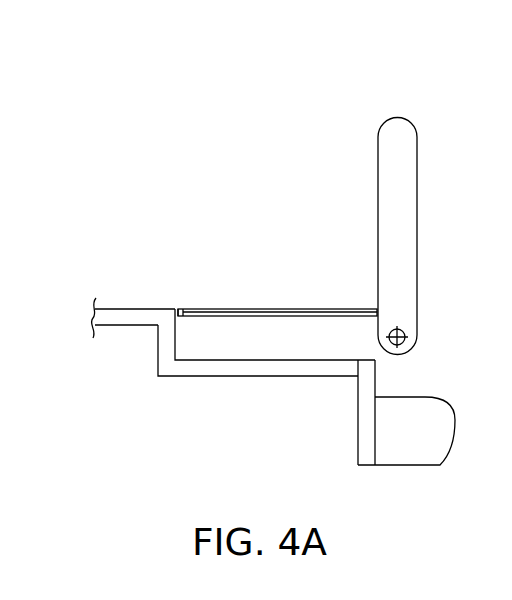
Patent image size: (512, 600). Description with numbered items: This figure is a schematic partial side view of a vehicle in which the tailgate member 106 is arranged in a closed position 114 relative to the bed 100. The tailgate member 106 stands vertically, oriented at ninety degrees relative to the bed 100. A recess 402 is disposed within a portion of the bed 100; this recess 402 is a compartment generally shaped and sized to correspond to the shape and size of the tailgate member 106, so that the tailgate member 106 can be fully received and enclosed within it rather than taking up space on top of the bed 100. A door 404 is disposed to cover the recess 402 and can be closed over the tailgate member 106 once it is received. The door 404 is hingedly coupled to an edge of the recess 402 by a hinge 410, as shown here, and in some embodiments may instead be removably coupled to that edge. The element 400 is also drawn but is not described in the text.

The bed 100 is at (135, 315).
The tailgate member 106 is at (397, 131).
The closed position 114 is at (428, 140).
The handle 400 is at (405, 456).
The recess 402 is at (242, 343).
The door 404 is at (275, 311).
The hinge 410 is at (182, 312).